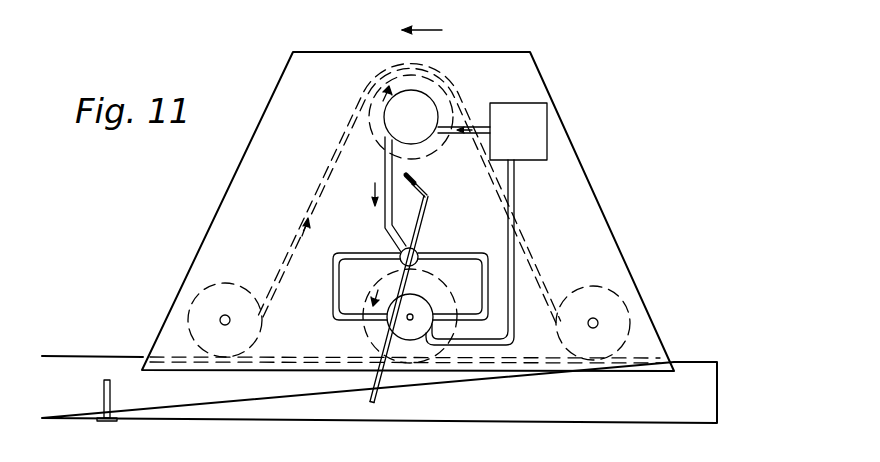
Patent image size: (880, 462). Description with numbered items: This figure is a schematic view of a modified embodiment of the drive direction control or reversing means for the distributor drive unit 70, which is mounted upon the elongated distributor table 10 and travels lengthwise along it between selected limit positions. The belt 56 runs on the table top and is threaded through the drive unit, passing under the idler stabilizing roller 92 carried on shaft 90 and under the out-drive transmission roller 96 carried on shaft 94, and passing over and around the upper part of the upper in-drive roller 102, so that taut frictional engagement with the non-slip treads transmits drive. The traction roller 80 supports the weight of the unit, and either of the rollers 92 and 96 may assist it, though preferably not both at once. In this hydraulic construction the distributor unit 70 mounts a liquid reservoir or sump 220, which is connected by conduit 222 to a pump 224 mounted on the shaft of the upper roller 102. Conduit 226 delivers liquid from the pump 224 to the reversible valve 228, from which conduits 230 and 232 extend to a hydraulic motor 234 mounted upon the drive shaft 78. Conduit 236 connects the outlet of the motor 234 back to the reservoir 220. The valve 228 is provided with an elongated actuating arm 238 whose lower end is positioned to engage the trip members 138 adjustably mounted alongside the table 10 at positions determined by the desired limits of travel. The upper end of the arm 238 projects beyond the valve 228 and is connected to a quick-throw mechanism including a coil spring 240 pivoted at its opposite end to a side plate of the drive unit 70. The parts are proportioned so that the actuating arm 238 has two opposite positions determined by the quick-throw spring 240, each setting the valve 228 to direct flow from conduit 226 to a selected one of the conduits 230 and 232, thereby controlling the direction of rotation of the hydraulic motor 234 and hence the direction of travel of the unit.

The distributor table 10 is at (65, 410).
The belt 56 is at (334, 176).
The distributor drive unit 70 is at (583, 184).
The shaft 78 is at (388, 326).
The traction roller 80 is at (430, 352).
The shaft 90 is at (221, 320).
The roller 92 is at (200, 295).
The shaft 94 is at (598, 320).
The drive transmission roller 96 is at (615, 294).
The upper roller 102 is at (428, 78).
The trip members 138 is at (104, 390).
The liquid reservoir 220 is at (537, 117).
The conduit 222 is at (483, 126).
The pump 224 is at (405, 112).
The conduit 226 is at (386, 175).
The reversible valve 228 is at (419, 249).
The conduit 230 is at (350, 254).
The conduit 232 is at (450, 257).
The hydraulic motor 234 is at (410, 330).
The conduit 236 is at (515, 195).
The actuating arm 238 is at (372, 389).
The coil spring 240 is at (420, 189).